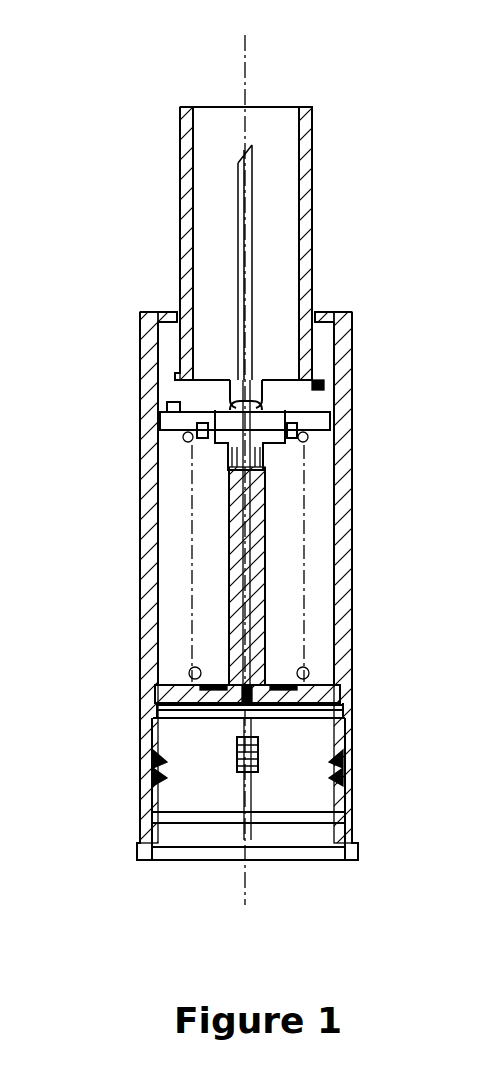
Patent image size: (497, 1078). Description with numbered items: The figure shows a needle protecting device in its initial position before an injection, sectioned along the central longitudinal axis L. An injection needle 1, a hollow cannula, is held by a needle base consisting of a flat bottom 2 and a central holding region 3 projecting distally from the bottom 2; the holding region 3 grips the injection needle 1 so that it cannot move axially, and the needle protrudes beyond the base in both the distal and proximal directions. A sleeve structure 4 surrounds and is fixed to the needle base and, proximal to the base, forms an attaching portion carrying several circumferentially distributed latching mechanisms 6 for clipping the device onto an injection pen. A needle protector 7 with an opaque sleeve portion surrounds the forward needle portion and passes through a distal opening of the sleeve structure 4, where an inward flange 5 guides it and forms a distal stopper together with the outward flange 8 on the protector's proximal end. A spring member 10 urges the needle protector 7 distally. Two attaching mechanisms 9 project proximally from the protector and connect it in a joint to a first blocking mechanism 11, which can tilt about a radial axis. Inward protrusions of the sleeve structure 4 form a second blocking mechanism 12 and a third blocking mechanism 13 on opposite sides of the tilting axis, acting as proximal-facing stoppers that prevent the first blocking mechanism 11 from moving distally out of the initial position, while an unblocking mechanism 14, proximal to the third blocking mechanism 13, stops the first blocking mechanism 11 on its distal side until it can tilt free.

The injection needle 1 is at (238, 205).
The flat bottom 2 is at (180, 693).
The central holding region 3 is at (230, 637).
The sleeve structure 4 is at (140, 530).
The flange 5 is at (165, 310).
The latching mechanisms 6 is at (178, 778).
The needle protector 7 is at (180, 235).
The flange 8 is at (232, 400).
The attaching mechanisms 9 is at (235, 405).
The spring member 10 is at (192, 598).
The first blocking mechanism 11 is at (312, 420).
The second blocking mechanism 12 is at (318, 385).
The third blocking mechanism 13 is at (165, 408).
The unblocking mechanism 14 is at (165, 437).
The longitudinal axis L is at (247, 68).